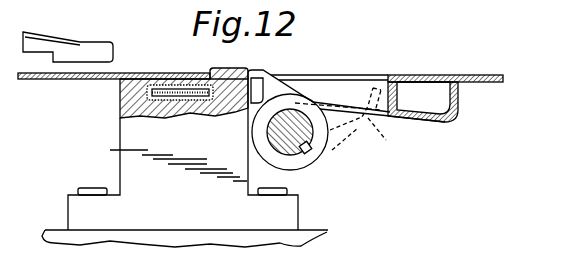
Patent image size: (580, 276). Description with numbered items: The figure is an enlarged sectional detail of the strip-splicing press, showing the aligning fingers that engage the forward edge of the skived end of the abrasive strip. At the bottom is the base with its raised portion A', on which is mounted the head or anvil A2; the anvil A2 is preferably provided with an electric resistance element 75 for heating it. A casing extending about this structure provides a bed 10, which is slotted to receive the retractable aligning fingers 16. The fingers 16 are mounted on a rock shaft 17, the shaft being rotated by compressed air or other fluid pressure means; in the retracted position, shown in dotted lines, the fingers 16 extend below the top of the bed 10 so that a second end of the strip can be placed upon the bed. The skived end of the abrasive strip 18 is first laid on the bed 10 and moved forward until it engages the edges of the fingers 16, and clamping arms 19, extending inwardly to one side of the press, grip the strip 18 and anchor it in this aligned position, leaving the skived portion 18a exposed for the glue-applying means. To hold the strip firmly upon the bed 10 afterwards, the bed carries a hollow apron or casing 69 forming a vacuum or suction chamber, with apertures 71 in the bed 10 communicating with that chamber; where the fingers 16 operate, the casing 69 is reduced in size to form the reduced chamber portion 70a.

The bed 10 is at (49, 80).
The retractable aligning fingers 16 is at (248, 72).
The rock shaft 17 is at (291, 146).
The abrasive strip 18 is at (137, 73).
The skived portion 18a is at (189, 71).
The clamping arms 19 is at (86, 42).
The hollow apron or casing 69 is at (428, 121).
The reduced chamber portion 70a is at (447, 100).
The apertures 71 is at (425, 77).
The electric resistance element 75 is at (147, 94).
The head or anvil A2 is at (120, 152).
The raised portion A' is at (185, 246).